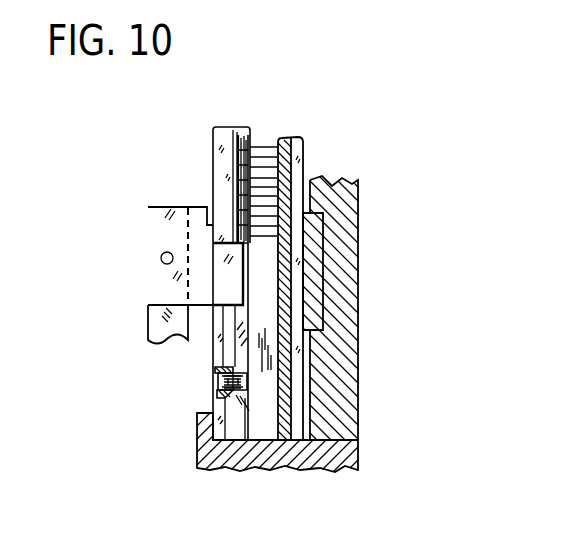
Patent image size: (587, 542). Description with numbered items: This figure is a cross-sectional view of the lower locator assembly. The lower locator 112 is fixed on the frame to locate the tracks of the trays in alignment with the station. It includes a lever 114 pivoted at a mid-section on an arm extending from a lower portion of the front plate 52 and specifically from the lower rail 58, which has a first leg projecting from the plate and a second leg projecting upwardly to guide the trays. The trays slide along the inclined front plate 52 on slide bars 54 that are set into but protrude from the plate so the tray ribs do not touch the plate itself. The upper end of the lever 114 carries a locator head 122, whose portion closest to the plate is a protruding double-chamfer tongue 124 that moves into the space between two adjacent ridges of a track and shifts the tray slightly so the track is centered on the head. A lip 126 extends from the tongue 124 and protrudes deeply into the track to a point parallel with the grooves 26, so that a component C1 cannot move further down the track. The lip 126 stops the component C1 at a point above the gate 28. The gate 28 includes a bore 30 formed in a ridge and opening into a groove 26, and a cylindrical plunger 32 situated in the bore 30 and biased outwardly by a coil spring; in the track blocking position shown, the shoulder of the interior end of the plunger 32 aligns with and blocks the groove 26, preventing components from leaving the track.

The groove 26 is at (258, 283).
The gate 28 is at (213, 390).
The bore 30 is at (233, 393).
The plunger 32 is at (235, 388).
The front plate 52 is at (350, 228).
The slide bars 54 is at (320, 308).
The lower rail 58 is at (200, 452).
The lower locator 112 is at (312, 163).
The lever 114 is at (152, 323).
The locator head 122 is at (148, 217).
The double-chamfer tongue 124 is at (213, 240).
The lip 126 is at (217, 352).
The component C1 is at (240, 186).